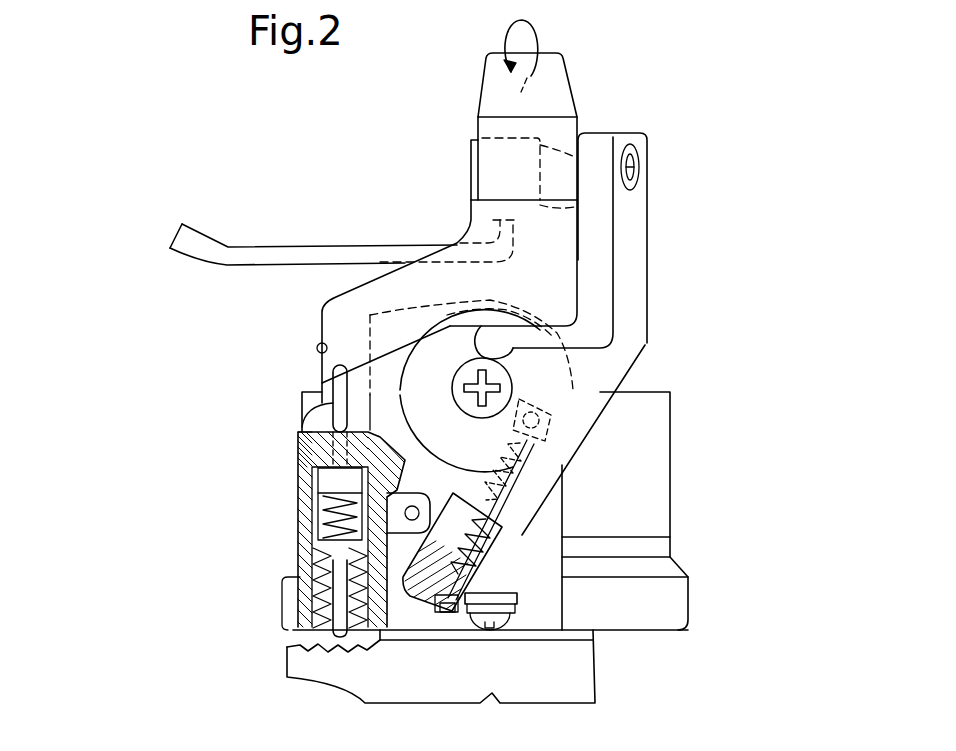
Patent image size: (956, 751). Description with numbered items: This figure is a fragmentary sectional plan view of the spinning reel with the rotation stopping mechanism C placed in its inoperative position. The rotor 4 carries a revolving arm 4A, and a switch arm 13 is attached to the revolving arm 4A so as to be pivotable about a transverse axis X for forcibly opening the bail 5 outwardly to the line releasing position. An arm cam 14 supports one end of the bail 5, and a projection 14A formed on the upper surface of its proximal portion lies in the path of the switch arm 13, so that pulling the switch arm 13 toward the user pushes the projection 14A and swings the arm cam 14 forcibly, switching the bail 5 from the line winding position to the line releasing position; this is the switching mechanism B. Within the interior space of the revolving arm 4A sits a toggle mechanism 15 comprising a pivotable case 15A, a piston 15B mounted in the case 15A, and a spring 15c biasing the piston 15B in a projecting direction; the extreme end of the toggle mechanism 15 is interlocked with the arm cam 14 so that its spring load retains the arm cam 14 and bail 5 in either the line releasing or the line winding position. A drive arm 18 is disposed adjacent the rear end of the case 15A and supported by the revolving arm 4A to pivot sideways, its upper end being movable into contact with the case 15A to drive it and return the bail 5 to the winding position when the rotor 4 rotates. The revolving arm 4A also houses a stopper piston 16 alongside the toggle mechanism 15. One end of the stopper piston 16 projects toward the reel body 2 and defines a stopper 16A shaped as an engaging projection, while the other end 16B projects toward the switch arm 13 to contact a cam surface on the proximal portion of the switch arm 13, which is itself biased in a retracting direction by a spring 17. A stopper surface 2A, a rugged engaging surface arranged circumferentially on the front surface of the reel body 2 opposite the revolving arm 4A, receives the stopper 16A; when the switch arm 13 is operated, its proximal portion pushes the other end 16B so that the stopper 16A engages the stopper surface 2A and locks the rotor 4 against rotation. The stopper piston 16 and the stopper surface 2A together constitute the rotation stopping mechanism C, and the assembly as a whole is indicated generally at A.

The reel body 2 is at (595, 677).
The stopper surface 2A is at (293, 647).
The rotor 4 is at (672, 422).
The revolving arm 4A is at (670, 537).
The bail 5 is at (228, 247).
The switch arm 13 is at (482, 101).
The arm cam 14 is at (638, 238).
The projection 14A is at (513, 353).
The toggle mechanism 15 is at (490, 563).
The pivotable case 15A is at (420, 634).
The piston 15B is at (527, 503).
The spring 15c is at (548, 452).
The stopper piston 16 is at (296, 597).
The stopper 16A is at (337, 637).
The other end of stopper piston 16B is at (332, 368).
The spring 17 is at (303, 560).
The drive arm 18 is at (512, 607).
The assembly A is at (683, 328).
The switching mechanism B is at (513, 482).
The rotation stopping mechanism C is at (115, 558).
The transverse axis X is at (330, 348).